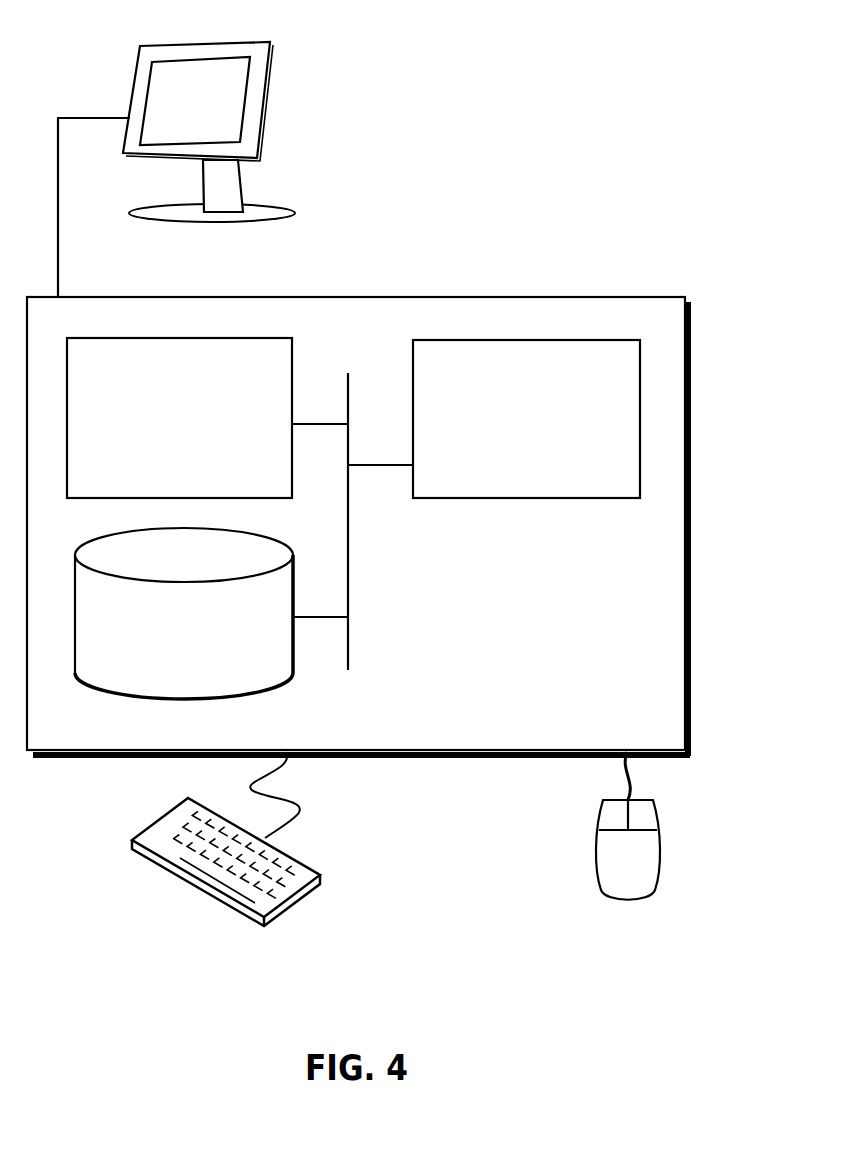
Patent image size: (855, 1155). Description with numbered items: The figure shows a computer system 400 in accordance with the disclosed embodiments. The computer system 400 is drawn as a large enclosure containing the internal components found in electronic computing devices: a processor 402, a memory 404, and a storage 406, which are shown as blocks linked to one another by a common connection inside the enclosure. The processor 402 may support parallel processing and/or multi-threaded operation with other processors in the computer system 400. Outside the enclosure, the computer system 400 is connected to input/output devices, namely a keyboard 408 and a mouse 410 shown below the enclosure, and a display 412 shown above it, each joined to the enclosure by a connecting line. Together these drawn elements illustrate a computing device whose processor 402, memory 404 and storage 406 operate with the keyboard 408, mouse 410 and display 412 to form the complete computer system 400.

The computer system 400 is at (403, 275).
The processor 402 is at (551, 431).
The memory 404 is at (201, 431).
The storage 406 is at (208, 642).
The keyboard 408 is at (150, 862).
The mouse 410 is at (648, 872).
The display 412 is at (176, 169).